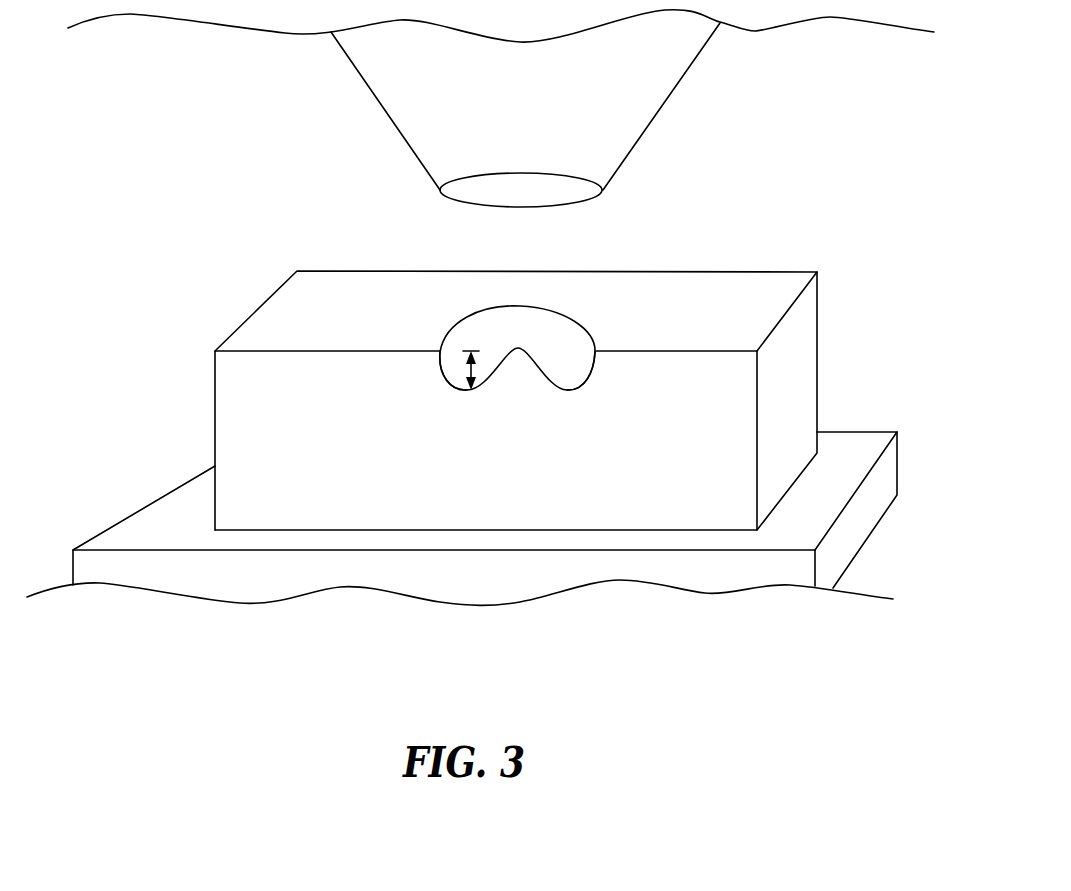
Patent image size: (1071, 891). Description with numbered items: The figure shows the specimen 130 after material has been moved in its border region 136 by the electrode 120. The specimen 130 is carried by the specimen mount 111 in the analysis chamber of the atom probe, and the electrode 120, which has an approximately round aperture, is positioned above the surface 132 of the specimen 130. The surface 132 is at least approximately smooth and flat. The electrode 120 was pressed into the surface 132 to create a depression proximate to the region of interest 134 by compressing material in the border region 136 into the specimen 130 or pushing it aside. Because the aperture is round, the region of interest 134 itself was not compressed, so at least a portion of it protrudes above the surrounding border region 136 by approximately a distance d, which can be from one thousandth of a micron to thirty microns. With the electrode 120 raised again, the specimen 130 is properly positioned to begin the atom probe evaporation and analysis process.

The specimen mount 111 is at (164, 569).
The electrode 120 is at (647, 128).
The specimen 130 is at (241, 325).
The surface 132 is at (745, 302).
The region of interest 134 is at (516, 366).
The border region 136 is at (472, 392).
The distance d is at (465, 375).